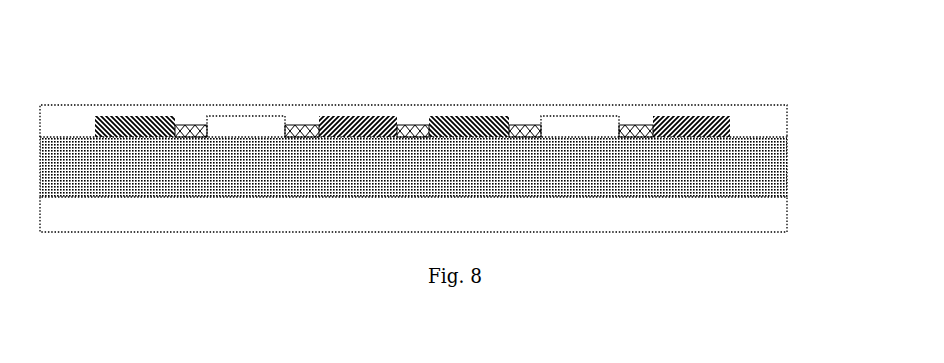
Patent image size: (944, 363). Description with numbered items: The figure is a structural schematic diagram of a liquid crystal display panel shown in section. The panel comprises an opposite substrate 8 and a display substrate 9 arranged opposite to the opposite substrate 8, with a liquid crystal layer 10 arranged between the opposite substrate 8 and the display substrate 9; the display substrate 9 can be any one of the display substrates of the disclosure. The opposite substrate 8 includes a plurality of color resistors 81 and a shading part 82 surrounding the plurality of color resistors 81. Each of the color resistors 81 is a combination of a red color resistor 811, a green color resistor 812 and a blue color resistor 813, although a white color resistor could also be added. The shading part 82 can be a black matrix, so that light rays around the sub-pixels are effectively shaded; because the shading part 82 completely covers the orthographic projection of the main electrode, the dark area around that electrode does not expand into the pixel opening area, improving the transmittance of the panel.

The opposite substrate 8 is at (787, 118).
The display substrate 9 is at (787, 212).
The liquid crystal layer 10 is at (787, 160).
The color resistors 81 is at (430, 53).
The red color resistor 811 is at (136, 115).
The green color resistor 812 is at (357, 115).
The blue color resistor 813 is at (246, 115).
The shading part 82 is at (627, 125).